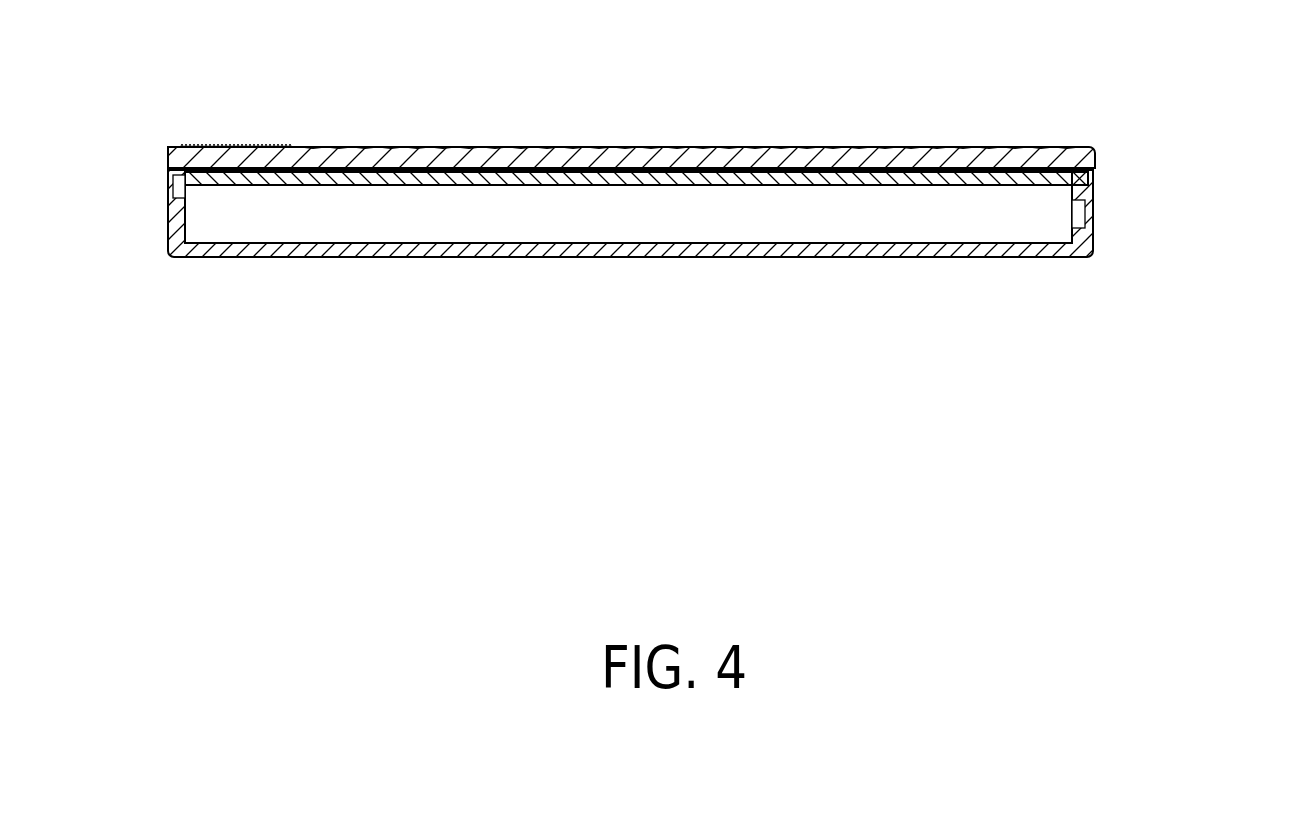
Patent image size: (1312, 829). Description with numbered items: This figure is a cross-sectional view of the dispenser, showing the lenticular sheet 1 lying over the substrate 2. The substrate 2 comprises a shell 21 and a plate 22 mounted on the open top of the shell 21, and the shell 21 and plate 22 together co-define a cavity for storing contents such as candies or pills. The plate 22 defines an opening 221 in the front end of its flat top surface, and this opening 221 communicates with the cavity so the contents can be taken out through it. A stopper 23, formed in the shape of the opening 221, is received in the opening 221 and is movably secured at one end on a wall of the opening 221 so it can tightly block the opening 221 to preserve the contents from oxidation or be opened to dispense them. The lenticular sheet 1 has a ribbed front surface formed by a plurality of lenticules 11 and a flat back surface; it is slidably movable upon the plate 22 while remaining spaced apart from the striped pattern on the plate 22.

The lenticular sheet 1 is at (1075, 150).
The lenticules 11 is at (585, 150).
The substrate 2 is at (733, 256).
The shell 21 is at (1093, 243).
The plate 22 is at (1093, 178).
The opening 221 is at (292, 178).
The stopper 23 is at (212, 168).